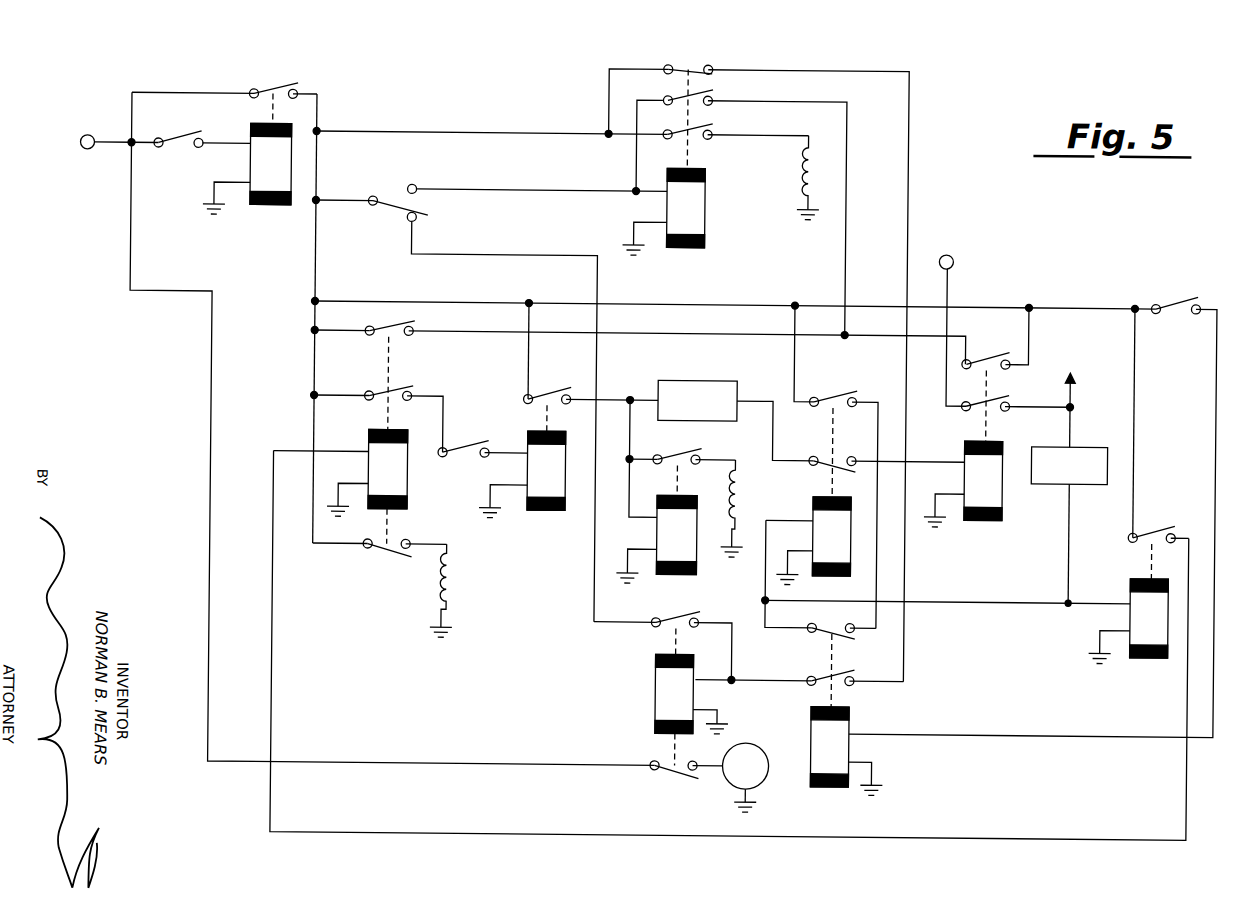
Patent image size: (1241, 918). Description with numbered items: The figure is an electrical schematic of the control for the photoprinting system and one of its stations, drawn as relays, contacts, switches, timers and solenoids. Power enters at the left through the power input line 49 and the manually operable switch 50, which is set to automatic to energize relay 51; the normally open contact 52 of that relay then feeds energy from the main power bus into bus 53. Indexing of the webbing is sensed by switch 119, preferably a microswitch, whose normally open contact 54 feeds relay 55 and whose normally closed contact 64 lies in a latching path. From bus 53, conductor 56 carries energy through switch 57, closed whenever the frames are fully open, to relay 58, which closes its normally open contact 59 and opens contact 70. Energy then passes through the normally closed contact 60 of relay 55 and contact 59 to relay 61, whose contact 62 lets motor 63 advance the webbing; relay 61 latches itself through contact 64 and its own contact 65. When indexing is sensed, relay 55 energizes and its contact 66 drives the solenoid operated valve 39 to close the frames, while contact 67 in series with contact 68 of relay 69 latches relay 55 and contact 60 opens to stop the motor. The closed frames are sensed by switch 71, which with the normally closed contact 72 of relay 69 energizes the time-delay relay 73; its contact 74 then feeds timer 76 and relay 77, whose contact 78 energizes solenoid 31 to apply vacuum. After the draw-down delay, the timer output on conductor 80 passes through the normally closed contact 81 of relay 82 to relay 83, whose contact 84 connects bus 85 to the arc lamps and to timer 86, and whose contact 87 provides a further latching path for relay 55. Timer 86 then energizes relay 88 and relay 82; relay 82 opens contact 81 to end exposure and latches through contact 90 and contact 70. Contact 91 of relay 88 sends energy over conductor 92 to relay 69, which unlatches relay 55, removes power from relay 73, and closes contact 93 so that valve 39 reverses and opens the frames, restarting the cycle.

The solenoid 31 is at (747, 504).
The solenoid operated valve 39 is at (809, 131).
The power input line 49 is at (130, 217).
The manually operable switch 50 is at (191, 140).
The relay 51 is at (266, 206).
The normally open contact 52 is at (297, 83).
The bus 53 is at (313, 279).
The normally open contact 54 is at (414, 182).
The relay 55 is at (705, 219).
The conductor 56 is at (397, 299).
The switch 57 is at (1176, 297).
The relay 58 is at (828, 783).
The normally open contact 59 is at (854, 671).
The normally closed contact 60 is at (695, 63).
The relay 61 is at (659, 697).
The normally open contact 62 is at (682, 777).
The motor 63 is at (740, 740).
The normally closed contact 64 is at (415, 221).
The normally open contact 65 is at (682, 607).
The normally open contact 66 is at (712, 126).
The normally open contact 67 is at (712, 93).
The contact 68 is at (410, 336).
The relay 69 is at (409, 506).
The contact 70 is at (827, 635).
The normally open switch 71 is at (478, 444).
The normally closed contact 72 is at (329, 392).
The relay 73 is at (549, 509).
The normally open contact 74 is at (568, 385).
The timer 76 is at (698, 377).
The relay 77 is at (699, 567).
The normally open contact 78 is at (678, 448).
The conductor 80 is at (773, 440).
The normally closed contact 81 is at (829, 453).
The relay 82 is at (816, 492).
The relay 83 is at (982, 515).
The normally open contact 84 is at (985, 391).
The bus 85 is at (950, 277).
The timer 86 is at (1059, 438).
The normally open contact 87 is at (1001, 342).
The relay 88 is at (1152, 651).
The normally open contact 90 is at (849, 390).
The contact 91 is at (1173, 514).
The conductor 92 is at (1136, 832).
The contact 93 is at (389, 560).
The switch 119 is at (394, 185).